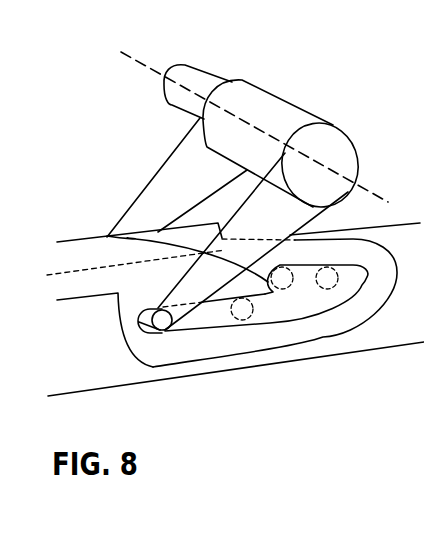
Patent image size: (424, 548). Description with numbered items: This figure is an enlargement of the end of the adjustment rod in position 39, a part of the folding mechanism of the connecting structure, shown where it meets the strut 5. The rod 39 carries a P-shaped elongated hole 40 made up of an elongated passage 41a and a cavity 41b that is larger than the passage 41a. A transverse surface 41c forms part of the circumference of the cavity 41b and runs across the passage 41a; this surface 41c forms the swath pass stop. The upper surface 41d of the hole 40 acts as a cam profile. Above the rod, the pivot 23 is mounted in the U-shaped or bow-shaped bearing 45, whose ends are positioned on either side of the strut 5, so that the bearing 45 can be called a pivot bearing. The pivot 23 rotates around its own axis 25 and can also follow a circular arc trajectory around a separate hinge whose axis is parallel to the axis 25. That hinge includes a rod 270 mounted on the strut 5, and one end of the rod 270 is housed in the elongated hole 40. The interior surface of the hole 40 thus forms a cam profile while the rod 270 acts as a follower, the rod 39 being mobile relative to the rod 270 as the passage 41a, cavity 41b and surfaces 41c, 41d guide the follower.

The pivot 23 is at (205, 88).
The axis 25 is at (260, 127).
The bearing 45 is at (193, 170).
The transverse surface 41c is at (107, 236).
The adjustment rod in position 39 is at (148, 293).
The strut 5 is at (94, 357).
The rod 270 is at (160, 333).
The elongated passage 41a is at (200, 320).
The P-shaped elongated hole 40 is at (237, 345).
The cavity 41b is at (307, 300).
The upper surface 41d is at (357, 268).